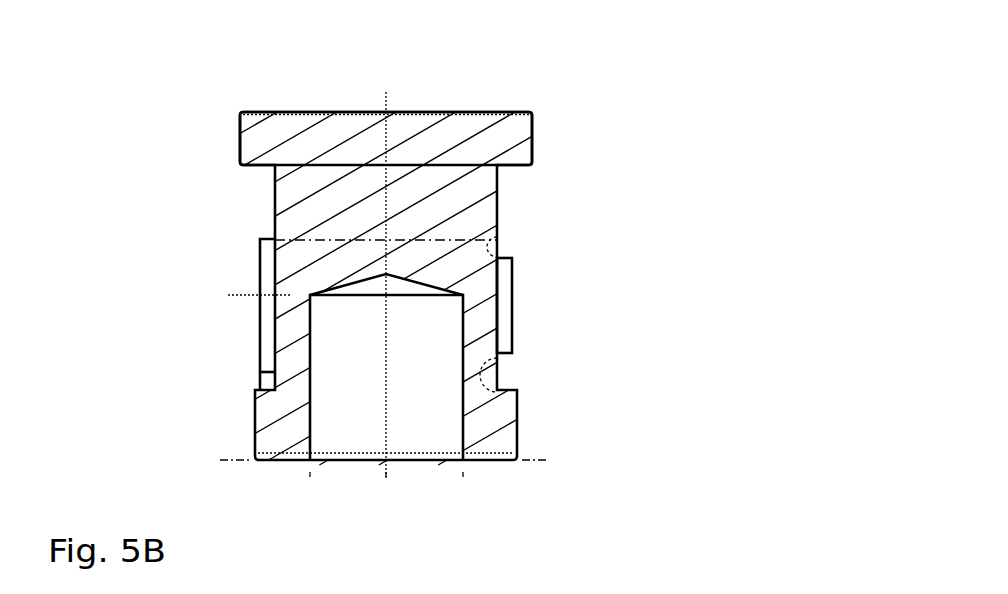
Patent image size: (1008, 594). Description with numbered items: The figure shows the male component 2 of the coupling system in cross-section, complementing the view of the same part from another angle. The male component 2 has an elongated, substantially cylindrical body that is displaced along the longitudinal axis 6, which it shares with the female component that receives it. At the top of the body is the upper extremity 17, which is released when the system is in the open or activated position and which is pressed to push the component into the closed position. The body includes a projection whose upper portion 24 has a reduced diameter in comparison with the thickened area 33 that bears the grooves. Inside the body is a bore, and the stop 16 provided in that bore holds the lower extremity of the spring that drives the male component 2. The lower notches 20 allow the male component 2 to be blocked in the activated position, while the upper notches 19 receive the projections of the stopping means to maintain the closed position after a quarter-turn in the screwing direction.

The male component 2 is at (522, 128).
The longitudinal axis 6 is at (387, 100).
The stop 16 is at (339, 280).
The upper extremity 17 is at (263, 112).
The upper notches 19 is at (497, 243).
The lower notches 20 is at (502, 376).
The upper portion 24 is at (473, 214).
The thickened area 33 is at (504, 313).